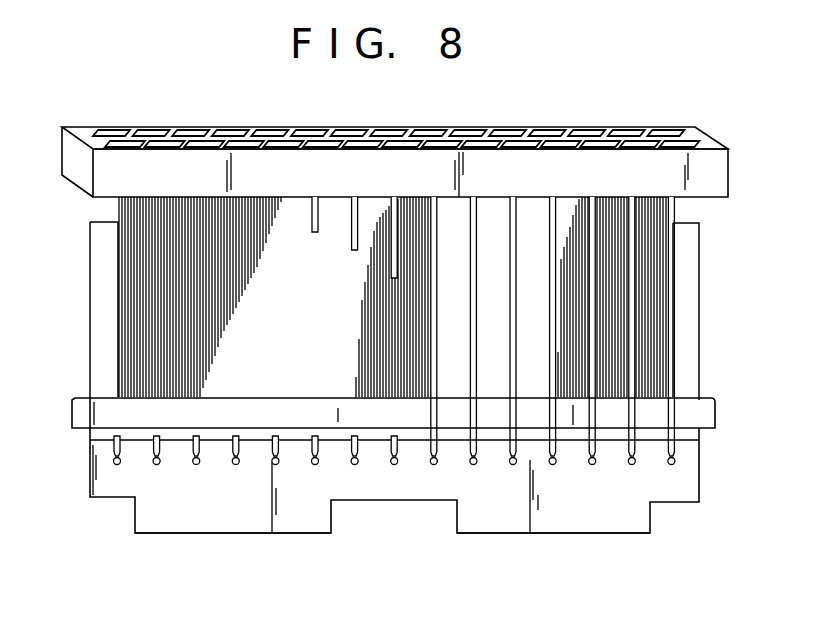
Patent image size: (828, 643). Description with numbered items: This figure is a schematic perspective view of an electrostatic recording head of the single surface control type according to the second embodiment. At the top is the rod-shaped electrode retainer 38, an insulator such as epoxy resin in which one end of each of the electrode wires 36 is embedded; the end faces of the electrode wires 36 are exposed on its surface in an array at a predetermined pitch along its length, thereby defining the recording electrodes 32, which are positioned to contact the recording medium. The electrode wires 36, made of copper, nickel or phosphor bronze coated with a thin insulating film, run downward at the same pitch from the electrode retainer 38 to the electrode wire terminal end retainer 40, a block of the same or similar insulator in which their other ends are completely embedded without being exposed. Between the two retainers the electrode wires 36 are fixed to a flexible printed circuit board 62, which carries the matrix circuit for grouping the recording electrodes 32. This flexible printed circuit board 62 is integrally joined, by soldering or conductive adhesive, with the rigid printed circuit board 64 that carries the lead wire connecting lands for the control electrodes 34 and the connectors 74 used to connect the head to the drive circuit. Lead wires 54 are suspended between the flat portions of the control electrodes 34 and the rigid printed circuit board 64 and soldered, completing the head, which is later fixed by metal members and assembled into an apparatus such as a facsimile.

The recording electrodes 32 is at (176, 127).
The control electrodes 34 is at (314, 127).
The electrode retainer 38 is at (75, 186).
The electrode wires 36 is at (117, 358).
The lead wires 54 is at (676, 273).
The flexible printed circuit board 62 is at (700, 312).
The electrode wire terminal end retainer 40 is at (716, 420).
The rigid printed circuit board 64 is at (700, 452).
The connectors 74 is at (224, 533).